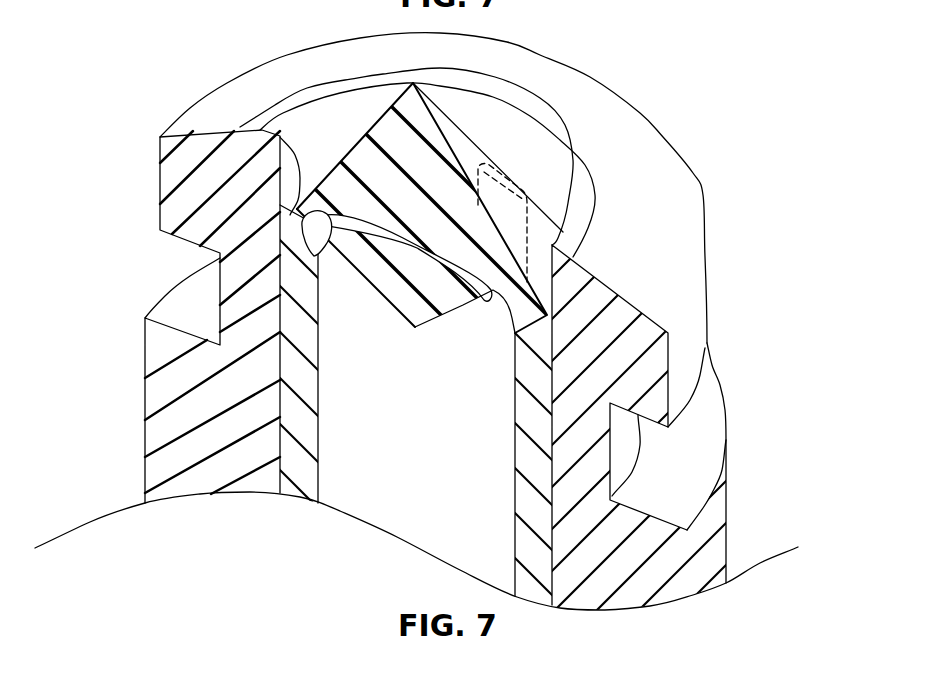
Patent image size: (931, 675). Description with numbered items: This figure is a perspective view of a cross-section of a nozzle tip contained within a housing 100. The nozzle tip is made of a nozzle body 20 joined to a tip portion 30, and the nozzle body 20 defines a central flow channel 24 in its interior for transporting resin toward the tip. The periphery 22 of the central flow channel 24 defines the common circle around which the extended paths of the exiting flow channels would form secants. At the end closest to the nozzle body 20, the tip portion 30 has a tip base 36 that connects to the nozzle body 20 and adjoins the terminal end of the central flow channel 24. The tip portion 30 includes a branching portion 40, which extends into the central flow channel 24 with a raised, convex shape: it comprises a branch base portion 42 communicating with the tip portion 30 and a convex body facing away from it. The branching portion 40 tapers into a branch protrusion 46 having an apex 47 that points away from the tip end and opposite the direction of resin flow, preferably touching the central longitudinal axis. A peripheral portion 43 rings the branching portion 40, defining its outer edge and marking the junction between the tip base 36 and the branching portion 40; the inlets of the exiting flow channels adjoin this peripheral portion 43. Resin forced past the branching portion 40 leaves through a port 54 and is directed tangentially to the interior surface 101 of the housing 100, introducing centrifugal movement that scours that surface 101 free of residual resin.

The housing 100 is at (692, 170).
The interior surface of the housing 101 is at (512, 117).
The port 54 is at (512, 182).
The branch base portion 42 is at (405, 243).
The tip portion 30 is at (398, 132).
The tip base 36 is at (262, 129).
The nozzle body 20 is at (292, 458).
The periphery of the central flow channel 22 is at (318, 484).
The central flow channel 24 is at (398, 517).
The peripheral portion 43 is at (332, 242).
The branch protrusion 46 is at (387, 290).
The apex 47 is at (419, 332).
The branching portion 40 is at (464, 312).